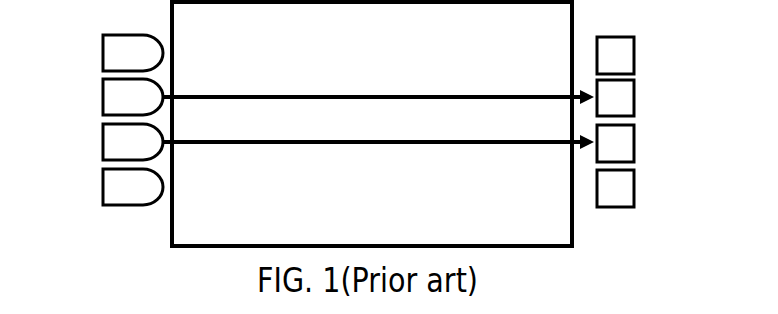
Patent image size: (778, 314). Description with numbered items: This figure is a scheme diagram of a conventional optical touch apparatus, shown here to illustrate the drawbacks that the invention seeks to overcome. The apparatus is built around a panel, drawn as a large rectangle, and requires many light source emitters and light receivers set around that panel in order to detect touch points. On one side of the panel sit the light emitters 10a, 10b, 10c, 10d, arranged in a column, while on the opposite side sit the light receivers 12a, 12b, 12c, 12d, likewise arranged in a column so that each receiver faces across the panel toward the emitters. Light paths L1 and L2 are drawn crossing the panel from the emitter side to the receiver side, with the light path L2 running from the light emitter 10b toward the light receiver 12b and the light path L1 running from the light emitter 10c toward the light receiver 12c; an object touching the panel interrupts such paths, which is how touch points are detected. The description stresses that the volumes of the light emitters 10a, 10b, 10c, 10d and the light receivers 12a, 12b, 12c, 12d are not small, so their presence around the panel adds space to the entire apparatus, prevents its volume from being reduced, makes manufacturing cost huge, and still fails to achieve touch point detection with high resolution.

The light emitter 10a is at (104, 52).
The light emitter 10b is at (104, 97).
The light emitter 10c is at (104, 142).
The light emitter 10d is at (104, 187).
The light receiver 12a is at (634, 52).
The light receiver 12b is at (634, 96).
The light receiver 12c is at (634, 150).
The light receiver 12d is at (634, 194).
The signal line L1 is at (378, 153).
The signal line L2 is at (378, 89).